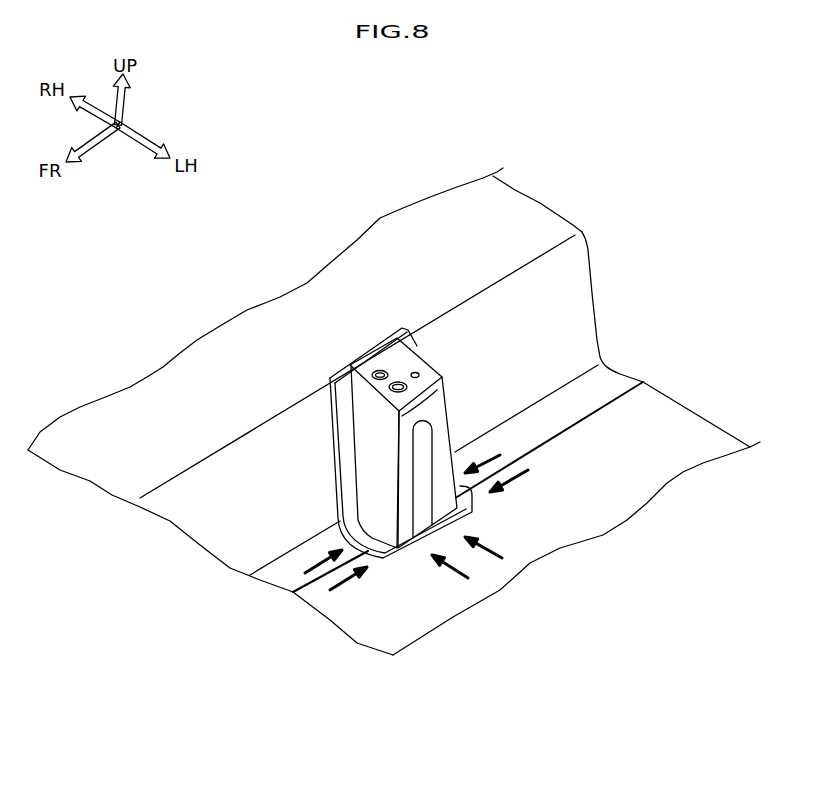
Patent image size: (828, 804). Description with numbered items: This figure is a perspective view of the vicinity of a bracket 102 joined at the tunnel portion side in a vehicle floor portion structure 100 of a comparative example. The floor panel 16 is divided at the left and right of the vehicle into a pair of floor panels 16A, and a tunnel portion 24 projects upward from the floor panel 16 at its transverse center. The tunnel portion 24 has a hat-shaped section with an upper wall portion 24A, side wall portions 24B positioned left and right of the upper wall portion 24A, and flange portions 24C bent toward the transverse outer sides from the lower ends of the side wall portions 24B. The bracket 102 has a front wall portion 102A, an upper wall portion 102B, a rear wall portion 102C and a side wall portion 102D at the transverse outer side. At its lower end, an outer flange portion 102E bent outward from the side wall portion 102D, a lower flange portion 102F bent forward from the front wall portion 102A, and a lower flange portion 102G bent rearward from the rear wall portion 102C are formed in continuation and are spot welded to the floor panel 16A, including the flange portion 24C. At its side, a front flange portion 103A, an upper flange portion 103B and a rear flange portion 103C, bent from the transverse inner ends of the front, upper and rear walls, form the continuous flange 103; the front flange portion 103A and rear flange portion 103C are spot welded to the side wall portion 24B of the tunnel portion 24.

The floor panel 16 is at (576, 551).
The floor panel 16A is at (398, 617).
The tunnel portion 24 is at (331, 413).
The upper wall portion 24A is at (233, 360).
The side wall portion 24B is at (213, 527).
The flange portion 24C is at (283, 573).
The vehicle floor portion structure 100 is at (477, 380).
The bracket 102 is at (453, 428).
The front wall portion 102A is at (375, 462).
The upper wall portion 102B is at (387, 360).
The rear wall portion 102C is at (452, 440).
The side wall portion 102D is at (404, 517).
The outer flange portion 102E is at (433, 530).
The lower flange portion 102F is at (343, 553).
The lower flange portion 102G is at (460, 487).
The flange of bracket 103 is at (363, 408).
The front flange portion 103A is at (348, 443).
The upper flange portion 103B is at (352, 351).
The rear flange portion 103C is at (435, 345).